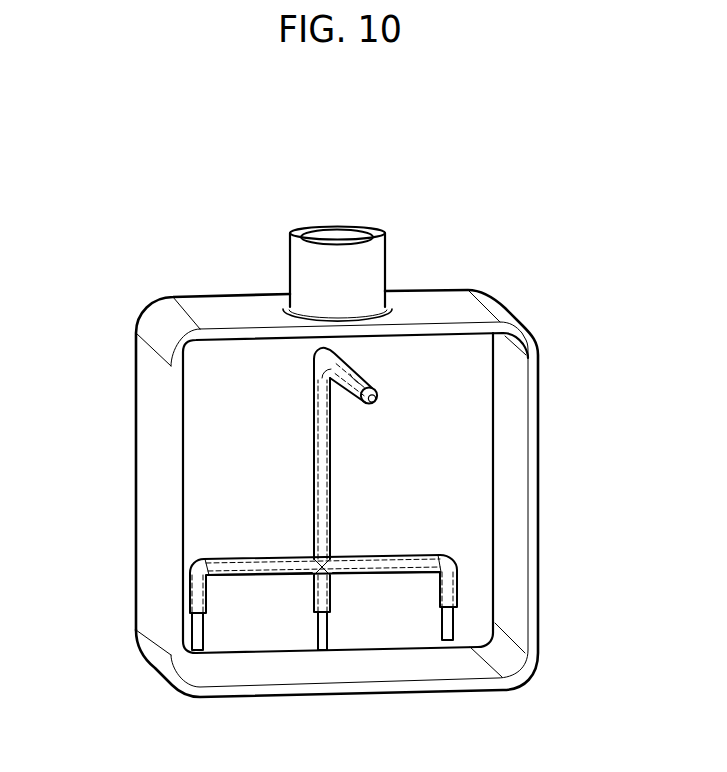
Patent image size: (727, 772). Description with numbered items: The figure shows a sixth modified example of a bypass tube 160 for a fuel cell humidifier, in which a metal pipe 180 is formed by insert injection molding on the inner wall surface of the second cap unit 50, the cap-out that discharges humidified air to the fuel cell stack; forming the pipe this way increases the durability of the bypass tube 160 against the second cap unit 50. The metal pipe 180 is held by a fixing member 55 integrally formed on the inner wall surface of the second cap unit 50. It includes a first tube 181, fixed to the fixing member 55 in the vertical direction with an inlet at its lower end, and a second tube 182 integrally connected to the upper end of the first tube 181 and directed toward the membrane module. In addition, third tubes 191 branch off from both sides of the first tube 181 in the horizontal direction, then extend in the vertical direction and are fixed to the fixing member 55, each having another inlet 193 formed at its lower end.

The second cap unit 50 is at (550, 493).
The fixing member 55 is at (313, 431).
The bypass tube 160 is at (290, 528).
The metal pipe 180 is at (380, 375).
The first tube 181 is at (325, 628).
The second tube 182 is at (376, 389).
The third tube 191 is at (387, 572).
The inlet 193 is at (448, 641).